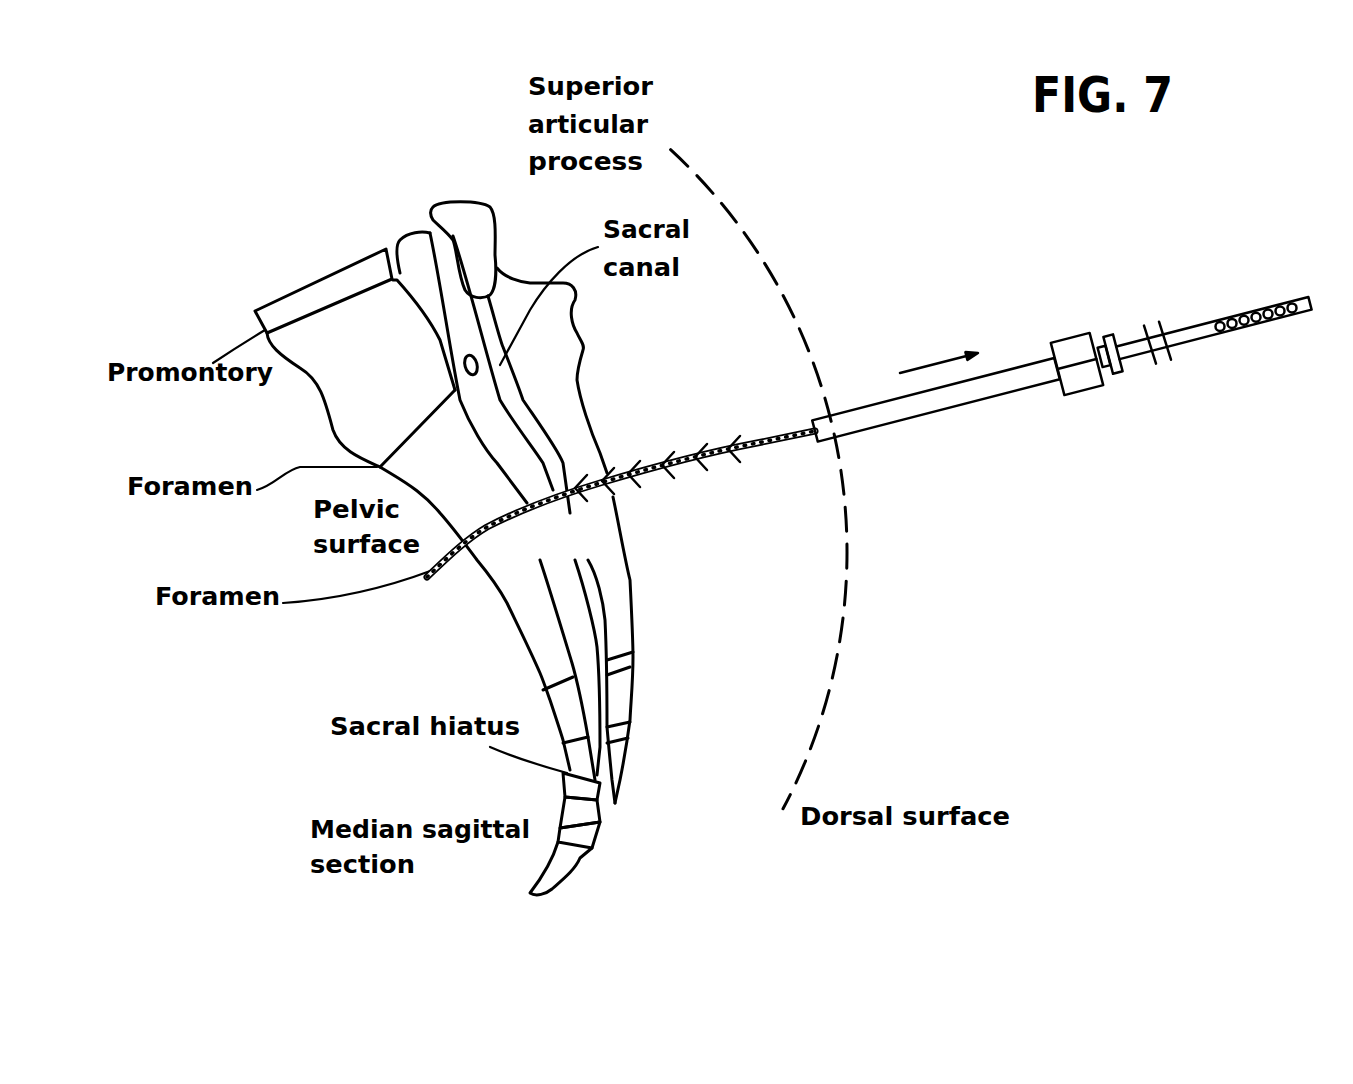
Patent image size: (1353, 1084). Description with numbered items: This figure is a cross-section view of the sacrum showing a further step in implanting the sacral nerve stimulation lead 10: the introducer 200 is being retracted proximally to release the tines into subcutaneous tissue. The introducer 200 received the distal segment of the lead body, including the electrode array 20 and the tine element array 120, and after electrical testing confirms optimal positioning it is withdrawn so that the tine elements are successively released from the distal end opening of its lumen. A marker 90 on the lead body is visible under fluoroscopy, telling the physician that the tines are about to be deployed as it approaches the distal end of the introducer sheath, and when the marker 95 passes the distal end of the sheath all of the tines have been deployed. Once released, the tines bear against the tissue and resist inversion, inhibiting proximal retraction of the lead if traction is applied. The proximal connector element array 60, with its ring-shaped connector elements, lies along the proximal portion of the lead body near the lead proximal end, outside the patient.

The introducer 200 is at (1045, 331).
The sacral nerve stimulation lead 10 is at (1132, 361).
The proximal connector element array 60 is at (1245, 336).
The marker 95 is at (764, 441).
The marker 90 is at (598, 462).
The tine element array 120 is at (756, 462).
The electrode array 20 is at (553, 447).